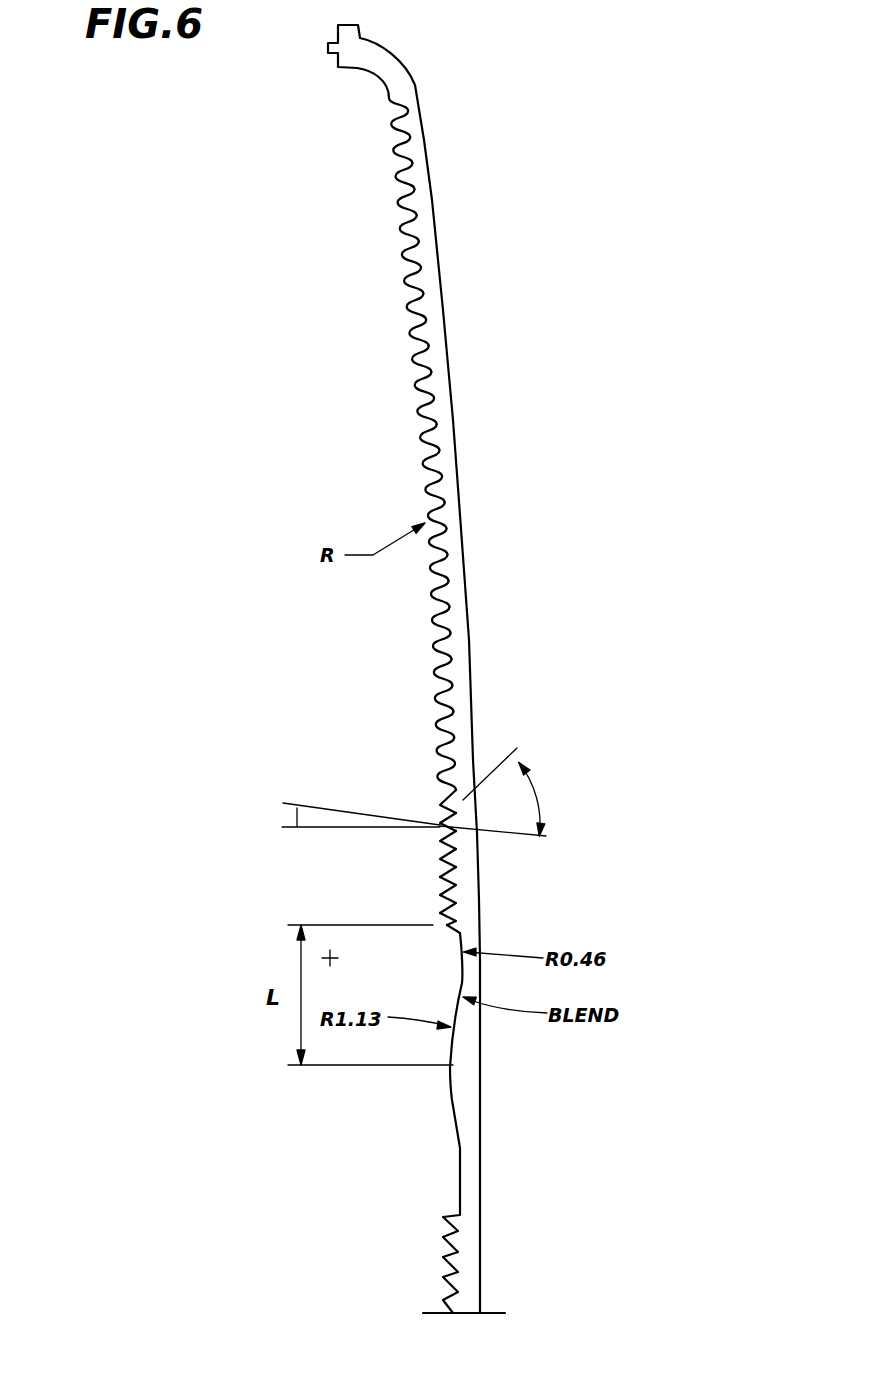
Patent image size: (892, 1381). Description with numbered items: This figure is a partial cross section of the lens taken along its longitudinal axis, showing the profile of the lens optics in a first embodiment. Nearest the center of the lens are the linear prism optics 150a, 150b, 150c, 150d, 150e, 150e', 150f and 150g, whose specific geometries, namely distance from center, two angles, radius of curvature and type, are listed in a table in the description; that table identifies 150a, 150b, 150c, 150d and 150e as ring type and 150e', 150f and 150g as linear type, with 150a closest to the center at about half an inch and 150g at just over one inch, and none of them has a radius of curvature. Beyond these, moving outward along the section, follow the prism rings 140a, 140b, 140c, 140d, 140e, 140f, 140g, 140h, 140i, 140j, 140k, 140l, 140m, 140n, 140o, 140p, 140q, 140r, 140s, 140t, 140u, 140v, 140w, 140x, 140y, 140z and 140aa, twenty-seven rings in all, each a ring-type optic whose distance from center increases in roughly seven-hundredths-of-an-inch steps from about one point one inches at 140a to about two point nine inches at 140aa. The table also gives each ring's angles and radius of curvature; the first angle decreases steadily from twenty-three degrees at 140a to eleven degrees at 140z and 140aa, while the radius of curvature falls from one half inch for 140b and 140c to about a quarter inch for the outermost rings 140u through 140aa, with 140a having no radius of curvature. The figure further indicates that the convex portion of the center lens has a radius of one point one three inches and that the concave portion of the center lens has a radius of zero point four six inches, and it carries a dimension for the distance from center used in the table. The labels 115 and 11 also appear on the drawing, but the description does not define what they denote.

The prism ring 140aa is at (390, 97).
The prism ring 140z is at (392, 124).
The prism ring 140y is at (394, 150).
The prism ring 140x is at (396, 177).
The prism ring 140w is at (398, 202).
The prism ring 140v is at (401, 228).
The prism ring 140u is at (402, 255).
The prism ring 140t is at (405, 281).
The prism ring 140s is at (407, 307).
The prism ring 140r is at (410, 333).
The prism ring 140q is at (413, 359).
The prism ring 140p is at (416, 385).
The prism ring 140o is at (418, 411).
The prism ring 140n is at (421, 437).
The prism ring 140m is at (424, 463).
The prism ring 140l is at (426, 489).
The prism ring 140k is at (429, 515).
The prism ring 140j is at (430, 541).
The prism ring 140i is at (431, 567).
The prism ring 140h is at (432, 594).
The prism ring 140g is at (433, 620).
The prism ring 140f is at (434, 646).
The prism ring 140e is at (435, 672).
The prism ring 140d is at (437, 698).
The prism ring 140c is at (437, 724).
The prism ring 140b is at (440, 750).
The prism ring 140a is at (438, 777).
The linear prism optic 150g is at (452, 796).
The linear prism optic 150f is at (440, 822).
The linear prism optic 150e' is at (393, 845).
The linear prism optic 150e is at (389, 865).
The linear prism optic 150d is at (452, 868).
The linear prism optic 150c is at (450, 877).
The linear prism optic 150b is at (455, 895).
The linear prism optic 150a is at (452, 915).
The pitch dimension 115 is at (272, 832).
The angle 11 is at (578, 791).